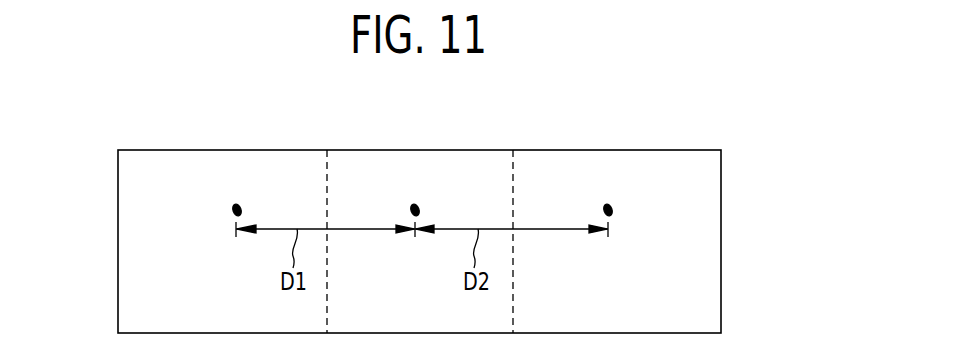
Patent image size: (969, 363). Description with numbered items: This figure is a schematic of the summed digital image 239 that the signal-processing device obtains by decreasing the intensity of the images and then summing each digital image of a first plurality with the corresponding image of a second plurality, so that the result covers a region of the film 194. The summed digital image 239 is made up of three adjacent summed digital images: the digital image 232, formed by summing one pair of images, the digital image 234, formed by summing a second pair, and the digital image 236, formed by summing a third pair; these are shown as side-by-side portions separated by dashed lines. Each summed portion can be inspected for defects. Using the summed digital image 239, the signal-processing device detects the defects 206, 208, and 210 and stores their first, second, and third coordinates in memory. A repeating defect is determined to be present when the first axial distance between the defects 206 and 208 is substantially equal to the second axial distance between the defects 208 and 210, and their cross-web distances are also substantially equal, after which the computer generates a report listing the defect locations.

The substrate 194 is at (721, 198).
The defect 206 is at (242, 209).
The defect 208 is at (420, 209).
The defect 210 is at (613, 209).
The digital image 232 is at (221, 158).
The digital image 234 is at (398, 158).
The digital image 236 is at (578, 158).
The summed digital image 239 is at (706, 143).